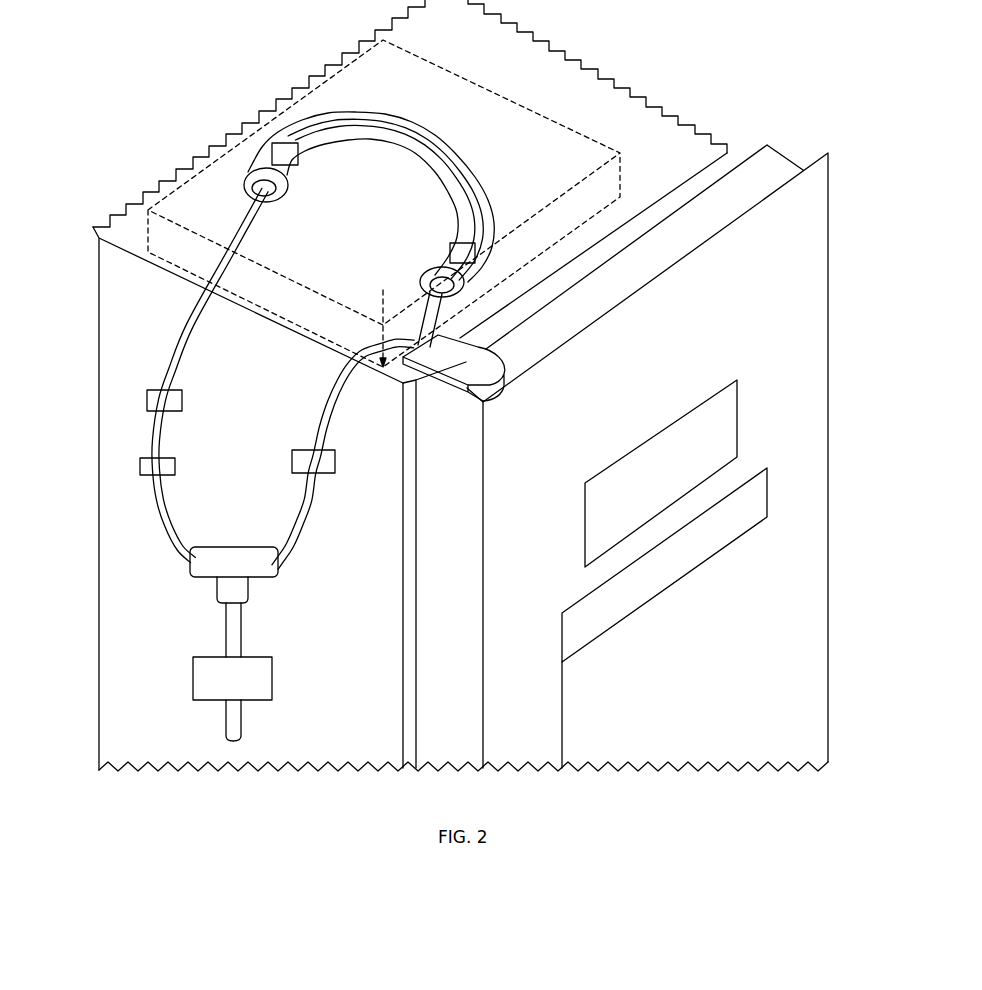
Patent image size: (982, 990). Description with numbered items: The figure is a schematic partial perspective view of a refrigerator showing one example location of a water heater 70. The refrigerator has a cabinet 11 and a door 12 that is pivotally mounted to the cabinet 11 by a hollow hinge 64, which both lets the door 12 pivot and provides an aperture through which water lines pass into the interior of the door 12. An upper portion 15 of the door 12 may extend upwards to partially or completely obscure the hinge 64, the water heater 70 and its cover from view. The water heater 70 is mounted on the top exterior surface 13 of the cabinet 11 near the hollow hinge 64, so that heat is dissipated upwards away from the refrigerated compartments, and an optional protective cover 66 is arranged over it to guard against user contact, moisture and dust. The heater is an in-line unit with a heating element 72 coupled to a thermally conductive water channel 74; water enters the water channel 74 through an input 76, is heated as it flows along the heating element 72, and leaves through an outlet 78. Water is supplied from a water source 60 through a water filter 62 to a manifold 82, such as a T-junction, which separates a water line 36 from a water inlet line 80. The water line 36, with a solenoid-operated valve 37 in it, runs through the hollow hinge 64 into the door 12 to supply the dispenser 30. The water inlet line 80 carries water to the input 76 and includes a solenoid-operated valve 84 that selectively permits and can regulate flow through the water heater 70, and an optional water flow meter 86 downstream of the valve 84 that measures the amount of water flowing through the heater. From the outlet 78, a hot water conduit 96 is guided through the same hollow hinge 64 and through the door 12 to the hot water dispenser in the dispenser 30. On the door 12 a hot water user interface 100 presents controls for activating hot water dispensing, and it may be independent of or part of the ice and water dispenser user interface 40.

The cabinet 11 is at (133, 298).
The door 12 is at (793, 383).
The top exterior surface 13 is at (140, 218).
The upper portion 15 is at (852, 176).
The dispenser 30 is at (727, 657).
The water line 36 is at (310, 528).
The solenoid-operated valve 37 is at (335, 458).
The ice and water dispenser user interface 40 is at (752, 507).
The water source 60 is at (243, 722).
The water filter 62 is at (257, 677).
The hollow hinge 64 is at (478, 366).
The protective cover 66 is at (533, 110).
The water heater 70 is at (392, 92).
The heating element 72 is at (397, 128).
The water channel 74 is at (455, 214).
The input 76 is at (270, 195).
The outlet 78 is at (436, 283).
The water inlet line 80 is at (172, 515).
The manifold 82 is at (257, 562).
The solenoid-operated valve 84 is at (176, 465).
The water flow meter 86 is at (183, 400).
The hot water conduit 96 is at (420, 318).
The hot water user interface 100 is at (670, 440).